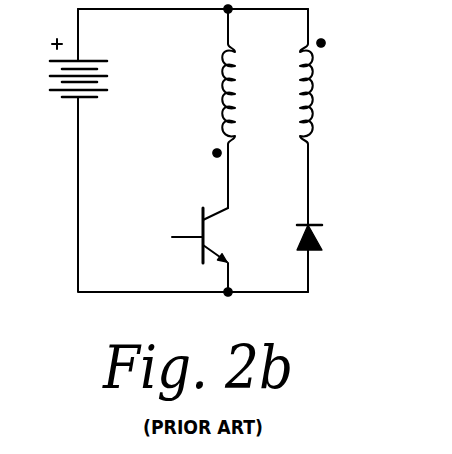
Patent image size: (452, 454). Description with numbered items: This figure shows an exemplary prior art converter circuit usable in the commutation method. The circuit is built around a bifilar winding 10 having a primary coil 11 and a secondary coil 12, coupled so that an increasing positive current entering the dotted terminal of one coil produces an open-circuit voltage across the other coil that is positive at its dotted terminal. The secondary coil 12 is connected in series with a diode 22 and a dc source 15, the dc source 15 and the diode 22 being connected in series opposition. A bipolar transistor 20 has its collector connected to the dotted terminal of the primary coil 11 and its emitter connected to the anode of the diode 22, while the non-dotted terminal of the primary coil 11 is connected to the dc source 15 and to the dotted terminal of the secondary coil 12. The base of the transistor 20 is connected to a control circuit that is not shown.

The bifilar winding 10 is at (278, 42).
The primary coil 11 is at (236, 112).
The secondary coil 12 is at (299, 108).
The dc source 15 is at (100, 70).
The bipolar transistor 20 is at (200, 242).
The diode 22 is at (297, 240).